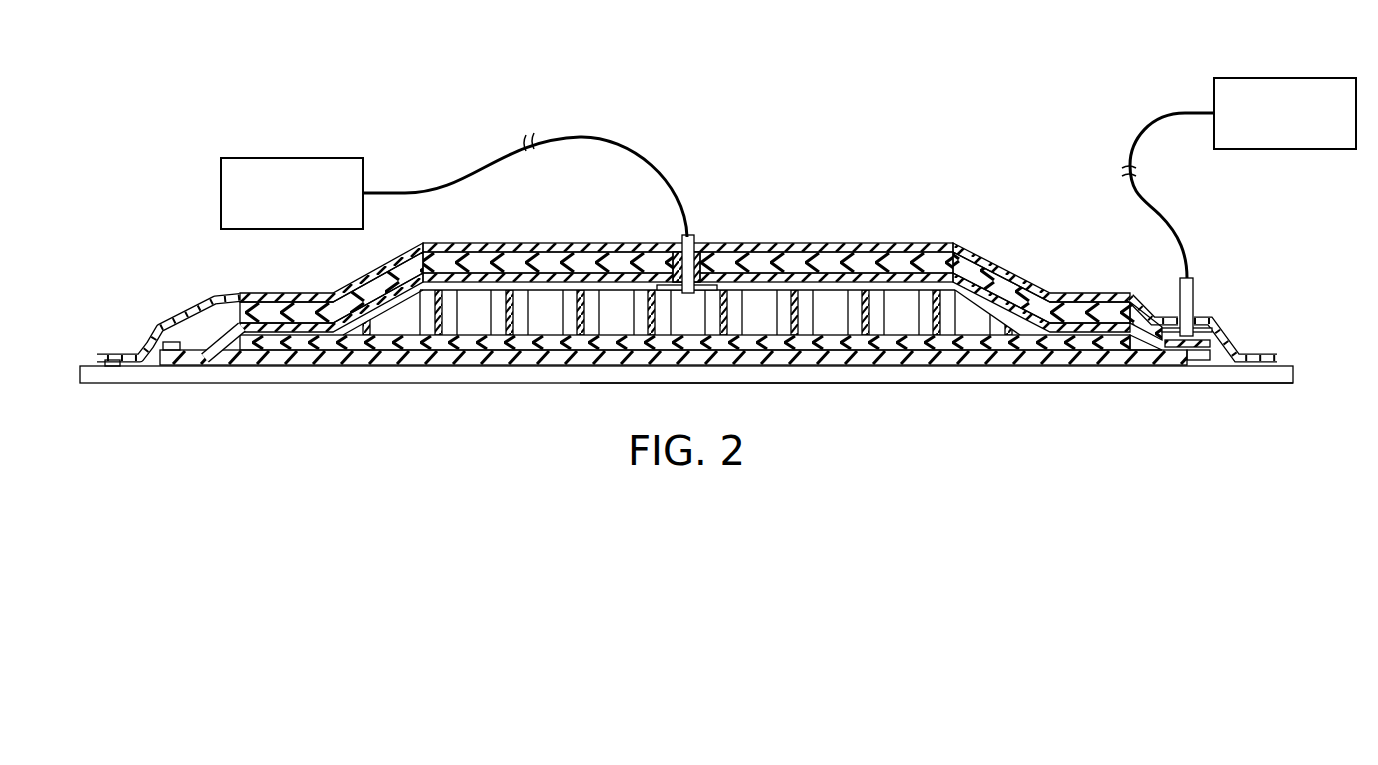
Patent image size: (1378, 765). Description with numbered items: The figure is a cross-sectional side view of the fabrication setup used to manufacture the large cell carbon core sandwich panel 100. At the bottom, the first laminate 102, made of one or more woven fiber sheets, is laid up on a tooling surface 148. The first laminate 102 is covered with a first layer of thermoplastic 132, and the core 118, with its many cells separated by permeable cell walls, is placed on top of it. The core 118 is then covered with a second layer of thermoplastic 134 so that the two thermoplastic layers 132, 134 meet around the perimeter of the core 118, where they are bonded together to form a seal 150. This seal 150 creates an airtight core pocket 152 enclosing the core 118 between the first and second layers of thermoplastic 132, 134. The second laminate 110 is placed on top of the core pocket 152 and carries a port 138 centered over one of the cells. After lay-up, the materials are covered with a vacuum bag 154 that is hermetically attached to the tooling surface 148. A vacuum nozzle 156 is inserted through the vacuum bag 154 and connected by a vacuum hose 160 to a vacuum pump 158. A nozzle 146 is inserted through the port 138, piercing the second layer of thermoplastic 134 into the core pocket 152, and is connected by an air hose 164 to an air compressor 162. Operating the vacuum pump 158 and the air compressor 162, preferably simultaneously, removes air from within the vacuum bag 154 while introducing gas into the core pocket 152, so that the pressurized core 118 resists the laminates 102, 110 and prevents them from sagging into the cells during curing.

The panel 100 is at (466, 80).
The first laminate 102 is at (560, 376).
The second laminate 110 is at (542, 244).
The core 118 is at (897, 298).
The first layer of thermoplastic 132 is at (231, 366).
The second layer of thermoplastic 134 is at (222, 313).
The port 138 is at (676, 262).
The nozzle 146 is at (701, 238).
The tooling surface 148 is at (966, 384).
The seal 150 is at (176, 352).
The core pocket 152 is at (756, 298).
The vacuum bag 154 is at (1078, 294).
The vacuum nozzle 156 is at (1196, 302).
The vacuum pump 158 is at (1285, 78).
The vacuum hose 160 is at (1160, 116).
The air compressor 162 is at (290, 158).
The air hose 164 is at (605, 137).